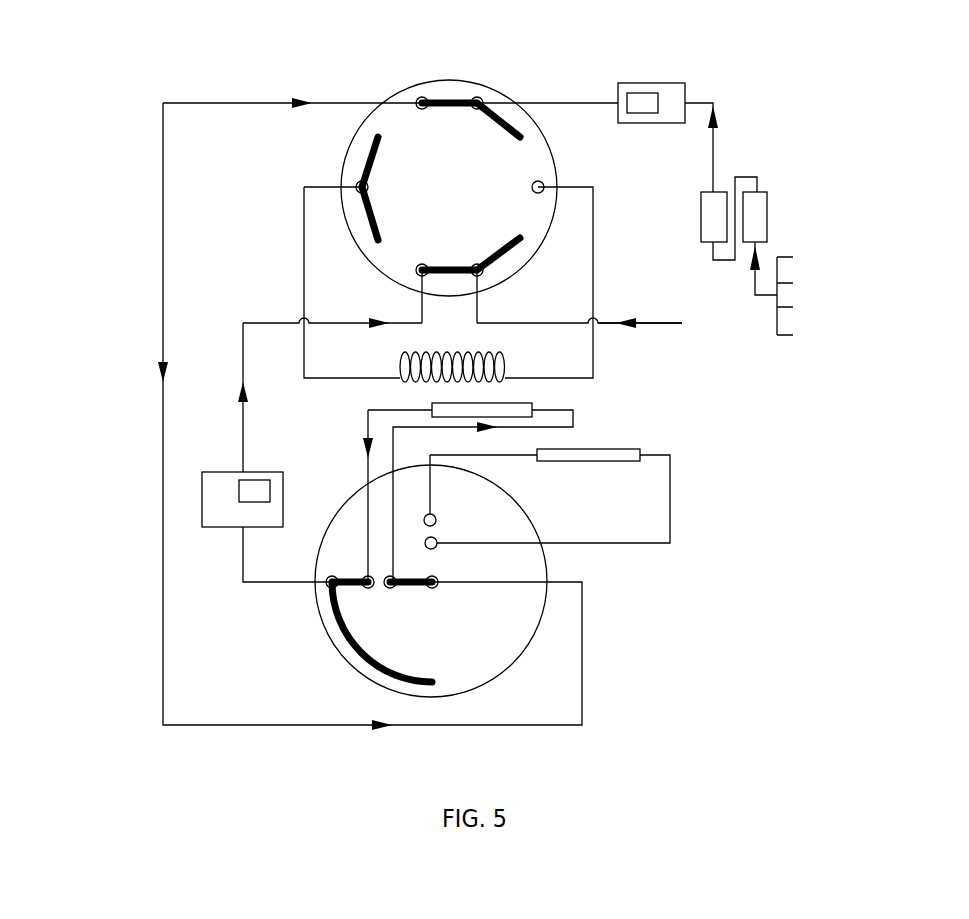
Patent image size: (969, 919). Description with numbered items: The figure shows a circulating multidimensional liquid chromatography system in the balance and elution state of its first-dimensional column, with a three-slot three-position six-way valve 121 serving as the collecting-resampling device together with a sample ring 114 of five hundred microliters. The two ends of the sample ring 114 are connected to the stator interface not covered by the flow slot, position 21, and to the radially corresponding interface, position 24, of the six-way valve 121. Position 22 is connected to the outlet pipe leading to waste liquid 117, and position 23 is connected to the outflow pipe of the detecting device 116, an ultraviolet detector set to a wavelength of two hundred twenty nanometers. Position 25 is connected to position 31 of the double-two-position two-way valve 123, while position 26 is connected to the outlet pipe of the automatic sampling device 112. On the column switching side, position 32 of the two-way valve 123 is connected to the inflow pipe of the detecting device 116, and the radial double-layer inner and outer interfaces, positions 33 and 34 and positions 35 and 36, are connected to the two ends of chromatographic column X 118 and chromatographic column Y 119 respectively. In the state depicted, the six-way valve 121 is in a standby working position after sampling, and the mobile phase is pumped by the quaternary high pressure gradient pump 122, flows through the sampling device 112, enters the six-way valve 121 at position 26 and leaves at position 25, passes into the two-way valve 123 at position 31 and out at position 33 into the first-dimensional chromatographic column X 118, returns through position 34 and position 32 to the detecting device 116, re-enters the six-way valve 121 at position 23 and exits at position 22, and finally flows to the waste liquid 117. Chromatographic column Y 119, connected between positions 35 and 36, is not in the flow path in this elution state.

The sampling device 112 is at (650, 82).
The sample ring 114 is at (505, 366).
The detecting device 116 is at (225, 505).
The waste liquid 117 is at (623, 325).
The chromatographic column X 118 is at (560, 420).
The chromatographic column Y 119 is at (627, 455).
The three-slot three-position six-way valve 121 is at (431, 158).
The quaternary high pressure gradient pump 122 is at (750, 232).
The double-two-position two-way valve 123 is at (538, 581).
The stator interface not covered by the flow slot 21 is at (524, 187).
The position 22 is at (471, 261).
The position 23 is at (421, 261).
The radial corresponding interface 24 is at (376, 192).
The position 25 is at (421, 116).
The position 26 is at (471, 116).
The position 31 is at (432, 595).
The position 32 is at (334, 572).
The position 33 is at (394, 595).
The position 34 is at (359, 595).
The position 35 is at (443, 554).
The position 36 is at (440, 514).